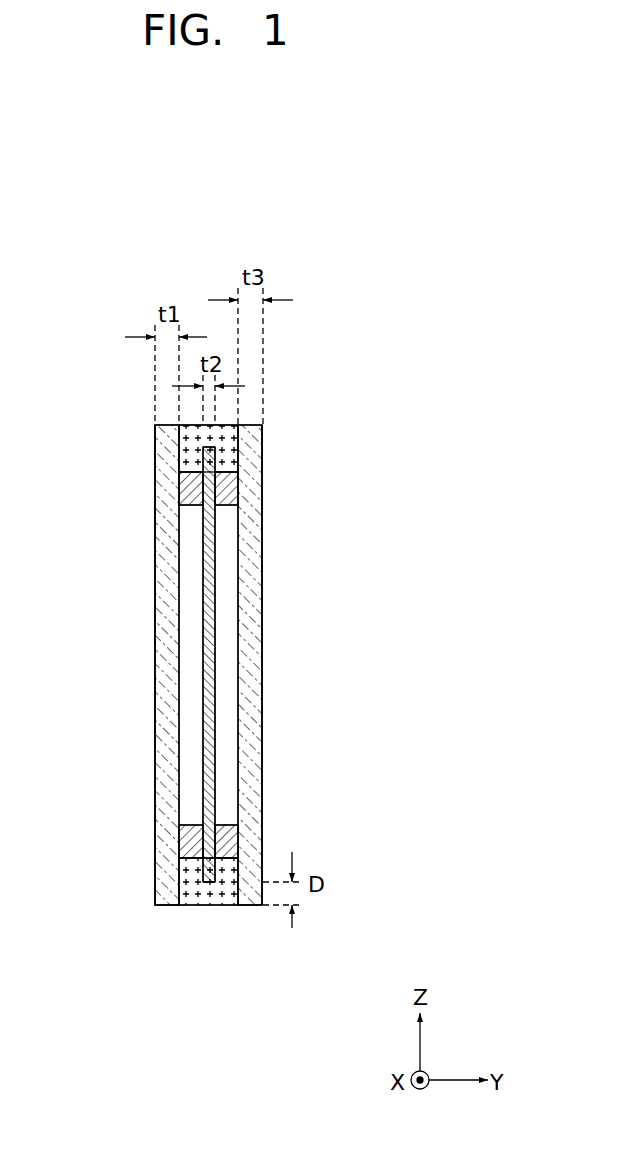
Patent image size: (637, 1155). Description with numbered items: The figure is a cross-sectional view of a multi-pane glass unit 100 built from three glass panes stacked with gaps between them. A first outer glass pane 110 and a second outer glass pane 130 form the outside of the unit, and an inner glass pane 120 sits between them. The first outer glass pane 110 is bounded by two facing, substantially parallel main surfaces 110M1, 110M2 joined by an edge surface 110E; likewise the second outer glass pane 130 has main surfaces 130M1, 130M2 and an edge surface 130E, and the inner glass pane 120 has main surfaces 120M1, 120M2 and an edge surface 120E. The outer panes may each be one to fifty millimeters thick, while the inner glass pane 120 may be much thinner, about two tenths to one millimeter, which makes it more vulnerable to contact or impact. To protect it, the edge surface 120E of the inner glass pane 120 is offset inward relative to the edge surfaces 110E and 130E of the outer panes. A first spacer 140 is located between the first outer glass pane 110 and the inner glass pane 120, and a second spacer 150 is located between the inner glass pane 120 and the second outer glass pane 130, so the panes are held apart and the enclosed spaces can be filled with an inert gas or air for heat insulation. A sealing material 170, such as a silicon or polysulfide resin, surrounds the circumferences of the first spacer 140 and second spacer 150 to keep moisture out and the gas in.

The multi-pane glass unit 100 is at (377, 217).
The first outer glass pane 110 is at (156, 447).
The inner glass pane 120 is at (205, 522).
The second outer glass pane 130 is at (262, 447).
The first spacer 140 is at (157, 488).
The second spacer 150 is at (240, 488).
The sealing material 170 is at (217, 905).
The main surface 110M1 is at (155, 632).
The main surface 110M2 is at (179, 598).
The main surface 120M1 is at (203, 665).
The main surface 120M2 is at (215, 700).
The main surface 130M1 is at (238, 550).
The main surface 130M2 is at (262, 583).
The edge surface 110E is at (163, 905).
The edge surface 120E is at (197, 905).
The edge surface 130E is at (247, 905).